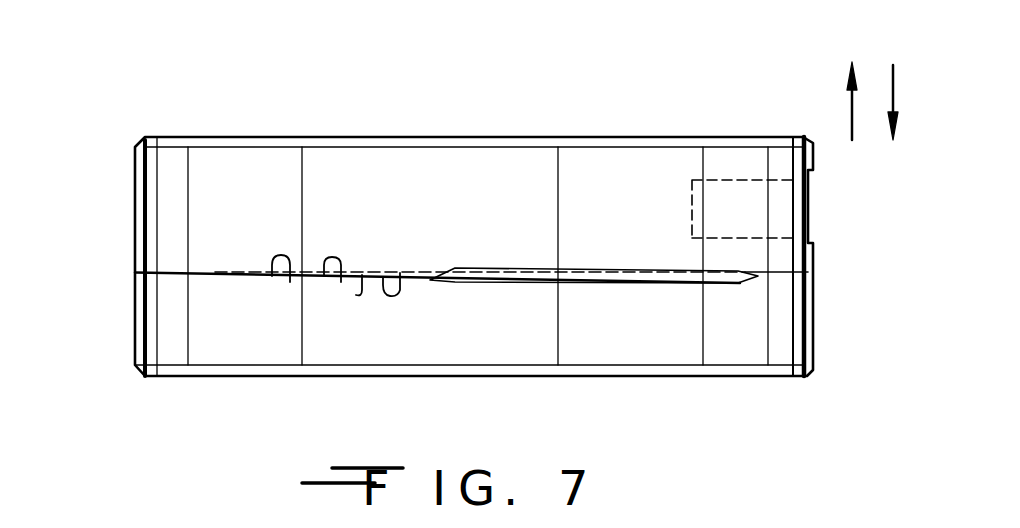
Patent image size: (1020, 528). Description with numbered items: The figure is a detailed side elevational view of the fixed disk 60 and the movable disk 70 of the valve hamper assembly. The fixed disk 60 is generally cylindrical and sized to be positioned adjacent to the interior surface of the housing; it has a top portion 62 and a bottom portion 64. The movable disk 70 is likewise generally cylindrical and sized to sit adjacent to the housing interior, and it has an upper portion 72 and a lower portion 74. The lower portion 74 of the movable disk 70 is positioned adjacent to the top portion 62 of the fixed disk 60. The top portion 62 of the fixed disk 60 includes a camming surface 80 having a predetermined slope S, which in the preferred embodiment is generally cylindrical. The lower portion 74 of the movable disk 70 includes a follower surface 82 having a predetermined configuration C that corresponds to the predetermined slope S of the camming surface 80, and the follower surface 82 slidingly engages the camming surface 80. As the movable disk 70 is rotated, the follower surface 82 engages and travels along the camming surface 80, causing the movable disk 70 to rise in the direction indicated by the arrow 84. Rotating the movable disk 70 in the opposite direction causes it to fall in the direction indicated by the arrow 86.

The fixed disk 60 is at (135, 312).
The top portion 62 is at (250, 272).
The bottom portion 64 is at (202, 377).
The movable disk 70 is at (135, 172).
The upper portion 72 is at (242, 137).
The lower portion 74 is at (470, 263).
The camming surface 80 is at (341, 282).
The follower surface 82 is at (400, 273).
The arrow 84 is at (850, 106).
The arrow 86 is at (893, 78).
The predetermined configuration C is at (362, 275).
The predetermined slope S is at (290, 282).